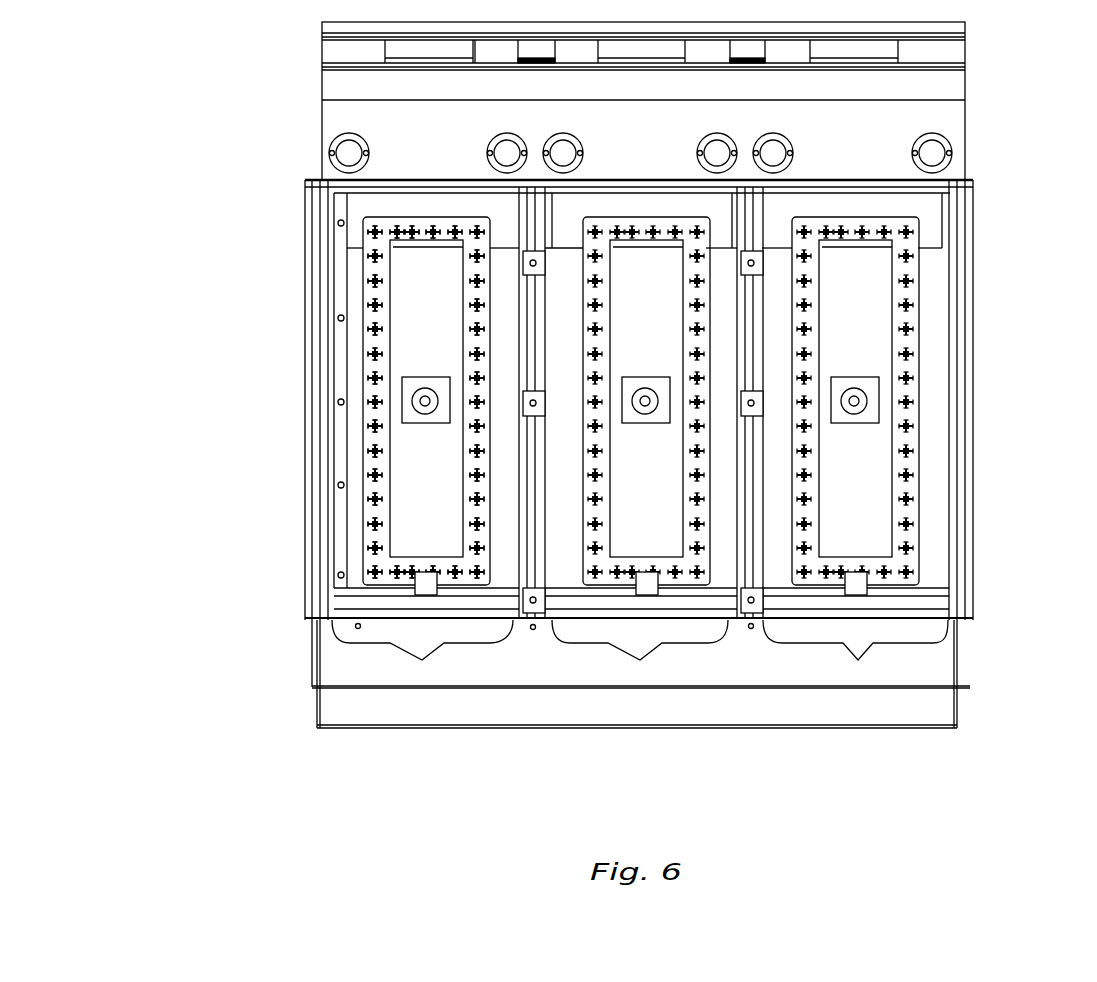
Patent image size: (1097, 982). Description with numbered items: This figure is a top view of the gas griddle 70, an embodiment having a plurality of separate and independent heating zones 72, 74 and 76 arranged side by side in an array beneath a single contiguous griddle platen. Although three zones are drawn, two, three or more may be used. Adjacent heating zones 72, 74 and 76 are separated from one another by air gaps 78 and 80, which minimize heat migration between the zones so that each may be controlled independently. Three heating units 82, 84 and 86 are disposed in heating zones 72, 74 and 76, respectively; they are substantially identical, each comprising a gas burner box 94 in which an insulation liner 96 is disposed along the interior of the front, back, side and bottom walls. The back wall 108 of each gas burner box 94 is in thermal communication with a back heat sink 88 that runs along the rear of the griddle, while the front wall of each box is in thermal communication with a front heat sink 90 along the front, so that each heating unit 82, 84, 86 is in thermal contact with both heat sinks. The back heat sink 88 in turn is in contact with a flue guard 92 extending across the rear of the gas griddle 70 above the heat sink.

The gas griddle 70 is at (222, 161).
The heating zone 72 is at (422, 660).
The heating zone 74 is at (640, 660).
The heating zone 76 is at (858, 660).
The air gap 78 is at (537, 638).
The air gap 80 is at (757, 637).
The heating unit 82 is at (426, 596).
The heating unit 84 is at (647, 590).
The heating unit 86 is at (867, 580).
The back heat sink 88 is at (937, 117).
The front heat sink 90 is at (940, 663).
The flue guard 92 is at (875, 53).
The gas burner box 94 is at (337, 557).
The insulation liner 96 is at (372, 507).
The back wall 108 is at (367, 192).